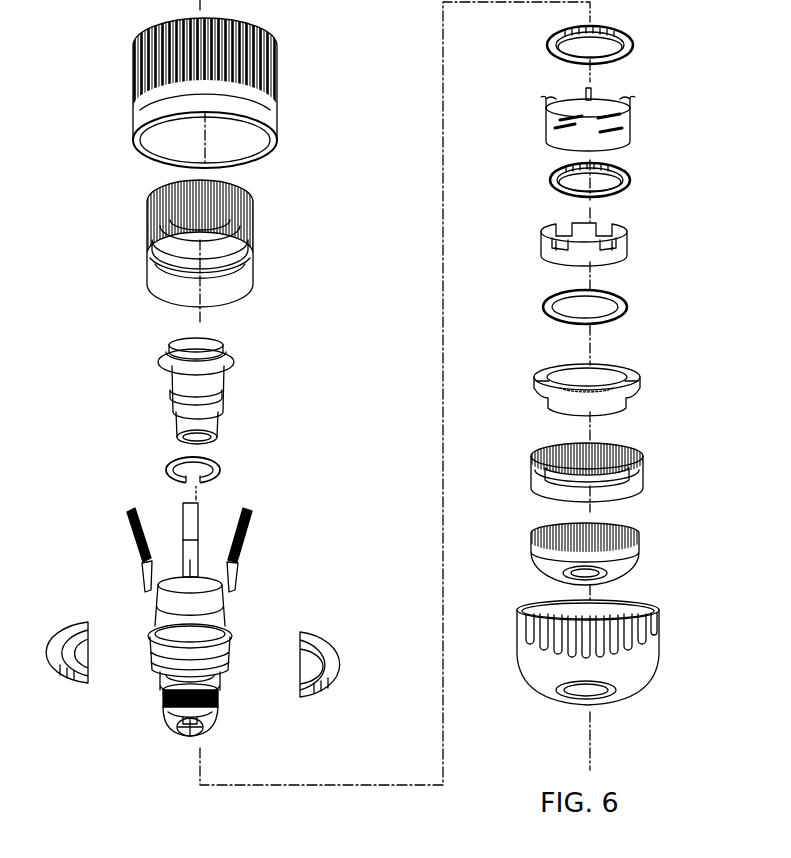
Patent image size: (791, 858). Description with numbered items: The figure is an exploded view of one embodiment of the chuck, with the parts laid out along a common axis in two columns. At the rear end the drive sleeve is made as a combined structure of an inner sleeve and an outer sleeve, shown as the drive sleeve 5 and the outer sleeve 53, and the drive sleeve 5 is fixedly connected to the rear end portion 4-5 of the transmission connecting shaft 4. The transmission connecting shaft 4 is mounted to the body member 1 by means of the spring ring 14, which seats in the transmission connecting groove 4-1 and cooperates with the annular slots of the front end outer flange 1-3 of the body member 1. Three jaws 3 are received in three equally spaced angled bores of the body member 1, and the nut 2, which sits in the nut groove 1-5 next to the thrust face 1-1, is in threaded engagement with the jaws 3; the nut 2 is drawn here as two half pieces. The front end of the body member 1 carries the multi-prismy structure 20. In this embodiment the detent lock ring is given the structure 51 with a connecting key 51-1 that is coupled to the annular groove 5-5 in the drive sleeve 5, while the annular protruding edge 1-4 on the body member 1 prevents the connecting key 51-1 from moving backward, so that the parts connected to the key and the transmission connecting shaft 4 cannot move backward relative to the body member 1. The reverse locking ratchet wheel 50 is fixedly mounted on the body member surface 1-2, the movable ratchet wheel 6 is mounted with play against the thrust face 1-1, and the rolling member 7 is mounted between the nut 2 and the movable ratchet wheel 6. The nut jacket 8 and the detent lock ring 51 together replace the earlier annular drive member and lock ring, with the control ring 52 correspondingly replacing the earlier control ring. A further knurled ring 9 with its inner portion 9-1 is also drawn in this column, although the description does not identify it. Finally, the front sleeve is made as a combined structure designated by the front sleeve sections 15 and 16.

The outer sleeve 53 is at (277, 80).
The drive sleeve 5 is at (241, 230).
The annular groove 5-5 is at (150, 240).
The transmission connecting shaft 4 is at (268, 355).
The rear end portion 4-5 is at (221, 343).
The transmission connecting groove 4-1 is at (222, 390).
The spring ring 14 is at (220, 462).
The jaws 3 is at (250, 523).
The body member 1 is at (224, 660).
The annular protruding edge 1-4 is at (205, 632).
The body member surface 1-2 is at (213, 648).
The nut groove 1-5 is at (168, 688).
The thrust face 1-1 is at (230, 672).
The front end outer flange 1-3 is at (222, 708).
The multi-prismy structure 20 is at (175, 728).
The nut 2 is at (350, 665).
The reverse locking ratchet wheel 50 is at (627, 58).
The detent lock ring 51 is at (627, 117).
The connecting key 51-1 is at (586, 89).
The movable ratchet wheel 6 is at (622, 178).
The control ring 52 is at (619, 248).
The rolling member 7 is at (628, 307).
The nut jacket 8 is at (643, 377).
The knurled collar 9 is at (646, 487).
The collar inner ring 9-1 is at (542, 483).
The front sleeve section 15 is at (637, 552).
The front sleeve section 16 is at (652, 640).